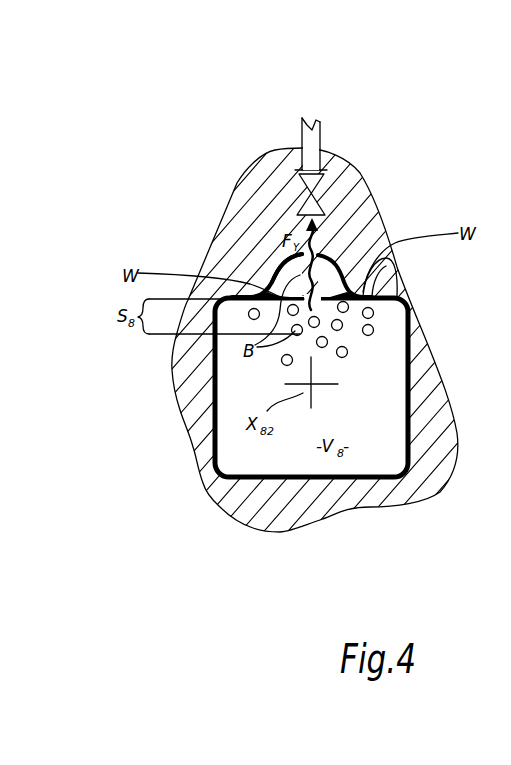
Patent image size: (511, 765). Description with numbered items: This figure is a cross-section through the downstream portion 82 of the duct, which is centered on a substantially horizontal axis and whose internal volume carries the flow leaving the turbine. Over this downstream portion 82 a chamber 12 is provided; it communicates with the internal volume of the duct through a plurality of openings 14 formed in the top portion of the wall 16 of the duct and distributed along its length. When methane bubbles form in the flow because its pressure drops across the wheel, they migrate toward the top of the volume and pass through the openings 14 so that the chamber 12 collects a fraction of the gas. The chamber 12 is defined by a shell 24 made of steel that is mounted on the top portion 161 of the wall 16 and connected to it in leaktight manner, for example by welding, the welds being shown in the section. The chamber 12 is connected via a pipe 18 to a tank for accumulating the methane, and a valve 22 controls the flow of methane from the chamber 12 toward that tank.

The chamber 12 is at (335, 280).
The openings 14 is at (328, 301).
The wall 16 is at (410, 431).
The top portion of the wall 161 is at (398, 259).
The pipe 18 is at (313, 134).
The valve 22 is at (296, 173).
The shell 24 is at (276, 284).
The downstream portion 82 is at (238, 403).